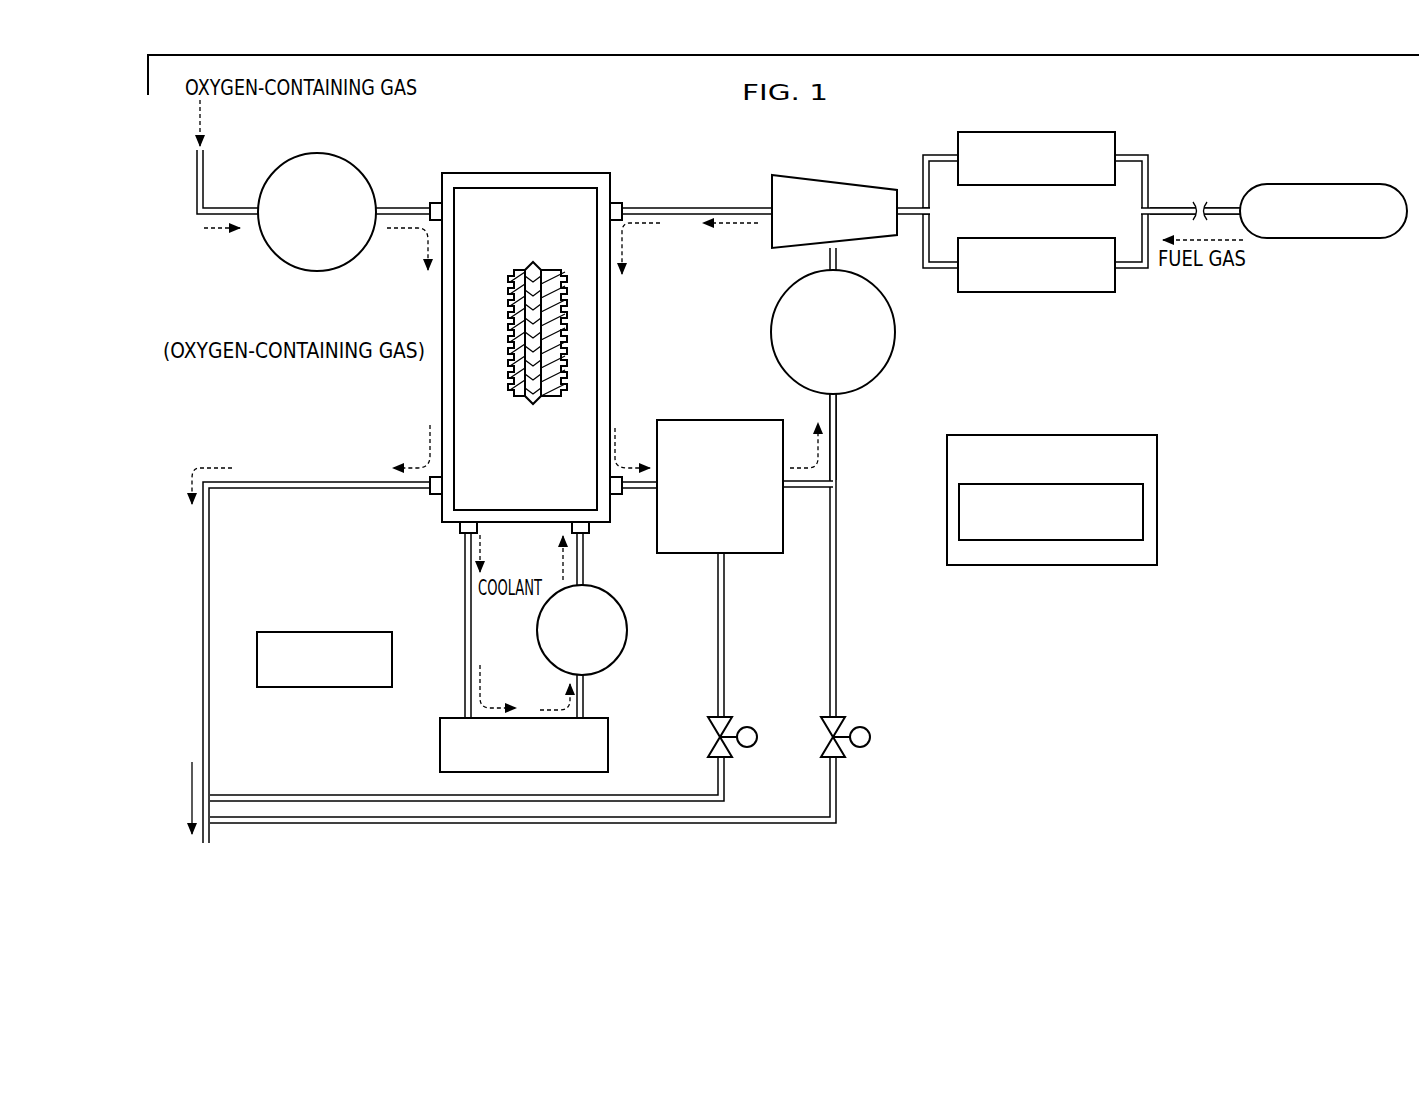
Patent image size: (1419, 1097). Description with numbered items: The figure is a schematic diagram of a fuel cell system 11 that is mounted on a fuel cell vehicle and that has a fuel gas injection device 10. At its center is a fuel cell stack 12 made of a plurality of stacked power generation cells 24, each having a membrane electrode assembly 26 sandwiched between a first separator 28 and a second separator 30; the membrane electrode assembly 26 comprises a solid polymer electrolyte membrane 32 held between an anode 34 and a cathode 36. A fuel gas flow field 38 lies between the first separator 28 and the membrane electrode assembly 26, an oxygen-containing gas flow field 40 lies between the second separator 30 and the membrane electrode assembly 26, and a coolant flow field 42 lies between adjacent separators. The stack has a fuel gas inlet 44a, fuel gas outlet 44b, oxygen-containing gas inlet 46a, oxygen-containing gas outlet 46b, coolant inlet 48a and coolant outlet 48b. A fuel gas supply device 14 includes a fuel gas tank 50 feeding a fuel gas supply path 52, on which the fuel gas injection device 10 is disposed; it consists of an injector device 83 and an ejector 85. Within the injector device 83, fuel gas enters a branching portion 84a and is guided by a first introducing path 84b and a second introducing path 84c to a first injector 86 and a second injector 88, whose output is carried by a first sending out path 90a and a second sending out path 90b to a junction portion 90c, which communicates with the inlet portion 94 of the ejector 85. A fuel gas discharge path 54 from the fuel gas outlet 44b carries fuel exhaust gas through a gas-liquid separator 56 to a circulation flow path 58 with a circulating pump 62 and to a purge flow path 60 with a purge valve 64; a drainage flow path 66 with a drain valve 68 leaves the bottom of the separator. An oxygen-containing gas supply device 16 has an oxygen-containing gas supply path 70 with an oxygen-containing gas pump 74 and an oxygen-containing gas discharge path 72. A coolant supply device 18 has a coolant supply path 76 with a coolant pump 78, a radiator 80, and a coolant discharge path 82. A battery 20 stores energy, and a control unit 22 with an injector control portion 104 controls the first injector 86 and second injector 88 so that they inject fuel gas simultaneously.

The fuel gas injection device 10 is at (997, 118).
The fuel cell system 11 is at (1318, 107).
The fuel cell stack 12 is at (551, 350).
The fuel gas supply device 14 is at (1319, 178).
The oxygen-containing gas supply device 16 is at (309, 189).
The coolant supply device 18 is at (524, 688).
The battery 20 is at (330, 632).
The control unit 22 is at (1085, 481).
The power generation cell 24 is at (502, 188).
The membrane electrode assembly 26 is at (531, 311).
The first separator 28 is at (531, 328).
The second separator 30 is at (456, 313).
The solid polymer electrolyte membrane 32 is at (514, 328).
The anode 34 is at (607, 313).
The cathode 36 is at (456, 313).
The fuel gas flow field 38 is at (556, 358).
The oxygen-containing gas flow field 40 is at (510, 292).
The coolant flow field 42 is at (512, 368).
The fuel gas inlet 44a is at (616, 200).
The fuel gas outlet 44b is at (620, 497).
The oxygen-containing gas inlet 46a is at (435, 200).
The oxygen-containing gas outlet 46b is at (434, 497).
The coolant inlet 48a is at (572, 530).
The coolant outlet 48b is at (462, 535).
The fuel gas tank 50 is at (1335, 184).
The fuel gas supply path 52 is at (1172, 207).
The fuel gas discharge path 54 is at (804, 492).
The gas-liquid separator 56 is at (730, 420).
The circulation flow path 58 is at (838, 428).
The purge flow path 60 is at (838, 519).
The circulating pump 62 is at (787, 297).
The purge valve 64 is at (862, 727).
The drainage flow path 66 is at (293, 795).
The drain valve 68 is at (750, 727).
The oxygen-containing gas supply path 70 is at (240, 207).
The oxygen-containing gas discharge path 72 is at (360, 489).
The oxygen-containing gas pump 74 is at (320, 183).
The coolant supply path 76 is at (585, 560).
The coolant pump 78 is at (626, 656).
The radiator 80 is at (440, 738).
The coolant discharge path 82 is at (465, 648).
The injector device 83 is at (1080, 204).
The branching portion 84a is at (1142, 209).
The first introducing path 84b is at (1147, 157).
The second introducing path 84c is at (1147, 270).
The ejector 85 is at (836, 184).
The first injector 86 is at (1087, 132).
The second injector 88 is at (1083, 294).
The first sending out path 90a is at (939, 155).
The second sending out path 90b is at (939, 268).
The junction portion 90c is at (928, 214).
The inlet portion 94 is at (910, 220).
The injector control portion 104 is at (1143, 510).